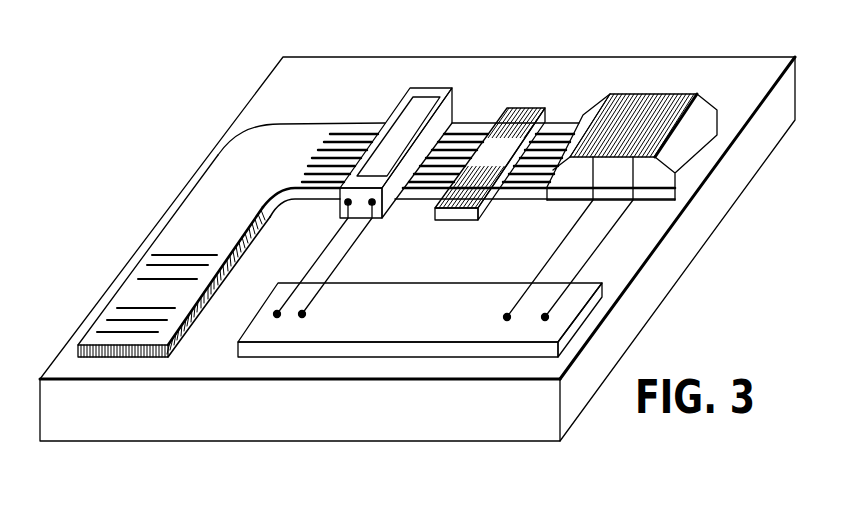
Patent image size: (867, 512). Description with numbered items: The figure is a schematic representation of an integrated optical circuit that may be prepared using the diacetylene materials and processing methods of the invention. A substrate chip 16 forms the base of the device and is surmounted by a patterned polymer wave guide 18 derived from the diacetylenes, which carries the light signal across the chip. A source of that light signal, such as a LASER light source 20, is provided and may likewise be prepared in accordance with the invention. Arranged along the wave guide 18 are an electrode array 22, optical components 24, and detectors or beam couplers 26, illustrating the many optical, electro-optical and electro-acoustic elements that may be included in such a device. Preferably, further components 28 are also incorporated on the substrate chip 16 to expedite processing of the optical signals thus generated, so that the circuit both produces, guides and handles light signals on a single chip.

The substrate chip 16 is at (207, 418).
The patterned polymer wave guide 18 is at (313, 162).
The LASER light source 20 is at (147, 280).
The electrode array 22 is at (420, 105).
The optical components 24 is at (527, 112).
The detectors or beam couplers 26 is at (669, 107).
The components 28 is at (412, 352).